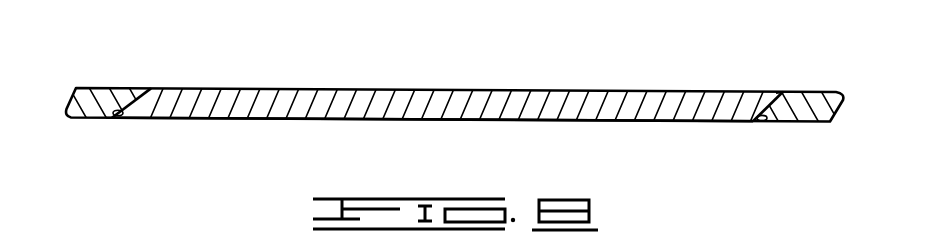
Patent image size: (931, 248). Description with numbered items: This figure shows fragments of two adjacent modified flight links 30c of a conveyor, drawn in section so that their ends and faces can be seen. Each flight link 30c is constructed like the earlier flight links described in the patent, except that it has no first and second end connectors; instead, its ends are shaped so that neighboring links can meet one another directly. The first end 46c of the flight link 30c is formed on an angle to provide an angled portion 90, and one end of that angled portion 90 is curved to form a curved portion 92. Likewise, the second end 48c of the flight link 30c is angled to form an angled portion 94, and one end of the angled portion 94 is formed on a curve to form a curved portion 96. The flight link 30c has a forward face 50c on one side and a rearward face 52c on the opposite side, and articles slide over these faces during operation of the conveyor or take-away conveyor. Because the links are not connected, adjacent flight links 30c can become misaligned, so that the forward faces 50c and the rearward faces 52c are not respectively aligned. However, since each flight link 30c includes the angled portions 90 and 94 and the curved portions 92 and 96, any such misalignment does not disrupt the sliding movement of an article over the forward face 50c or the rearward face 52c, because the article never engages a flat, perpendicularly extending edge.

The flight link 30c is at (105, 85).
The second end 48c is at (145, 89).
The forward face 50c is at (431, 89).
The rearward face 52c is at (443, 121).
The first end 46c is at (769, 112).
The curved portion 92 is at (781, 93).
The angled portion 90 is at (758, 120).
The angled portion 94 is at (111, 116).
The curved portion 96 is at (118, 114).